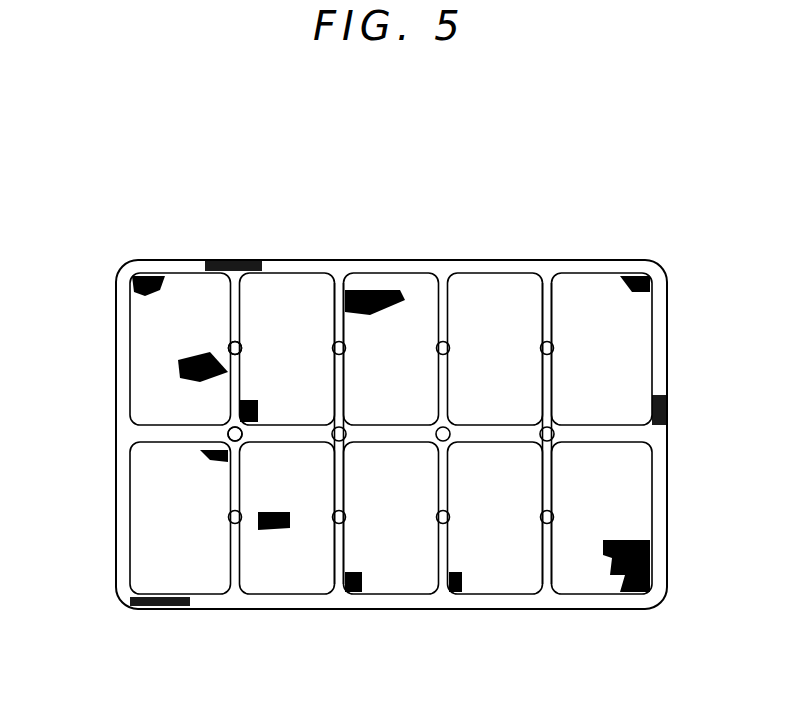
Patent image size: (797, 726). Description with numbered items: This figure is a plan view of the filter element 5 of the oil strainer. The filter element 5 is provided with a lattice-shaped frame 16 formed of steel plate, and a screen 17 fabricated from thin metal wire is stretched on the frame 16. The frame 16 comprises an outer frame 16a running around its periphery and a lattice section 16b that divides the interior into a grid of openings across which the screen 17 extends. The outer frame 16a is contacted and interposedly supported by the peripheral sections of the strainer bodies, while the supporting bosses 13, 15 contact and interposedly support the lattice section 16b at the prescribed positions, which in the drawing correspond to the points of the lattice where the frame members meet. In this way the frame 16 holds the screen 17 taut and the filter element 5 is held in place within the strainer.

The filter element 5 is at (480, 238).
The supporting boss 15 is at (231, 343).
The supporting boss 13 is at (235, 392).
The frame 16 is at (495, 603).
The outer frame 16a is at (493, 274).
The lattice section 16b is at (550, 383).
The screen 17 is at (615, 531).